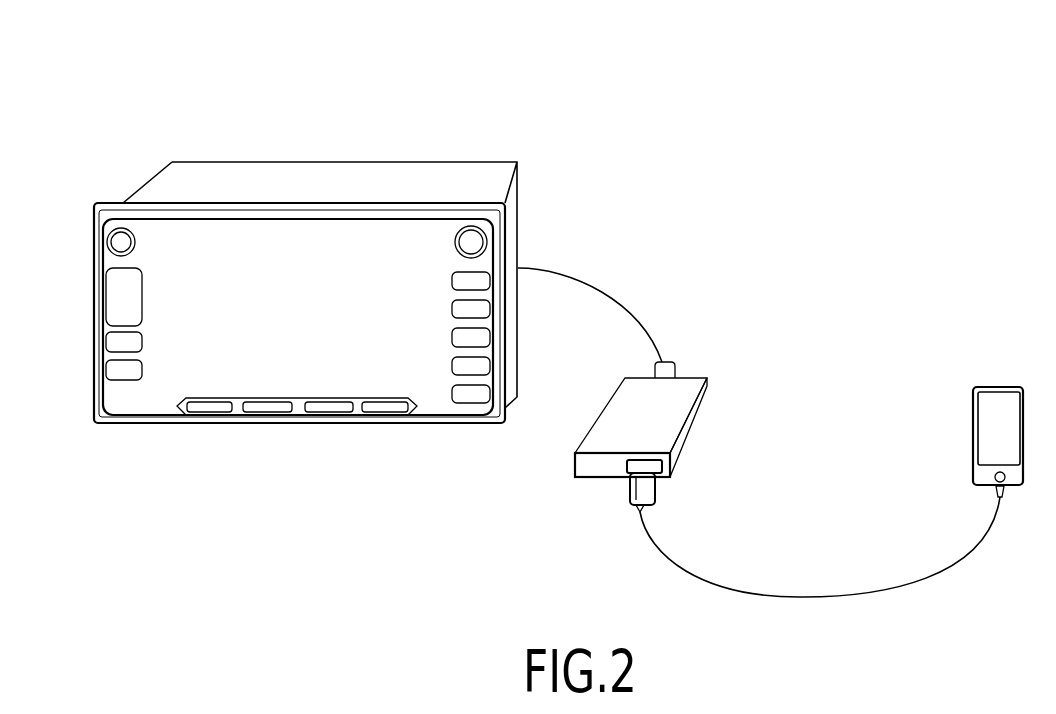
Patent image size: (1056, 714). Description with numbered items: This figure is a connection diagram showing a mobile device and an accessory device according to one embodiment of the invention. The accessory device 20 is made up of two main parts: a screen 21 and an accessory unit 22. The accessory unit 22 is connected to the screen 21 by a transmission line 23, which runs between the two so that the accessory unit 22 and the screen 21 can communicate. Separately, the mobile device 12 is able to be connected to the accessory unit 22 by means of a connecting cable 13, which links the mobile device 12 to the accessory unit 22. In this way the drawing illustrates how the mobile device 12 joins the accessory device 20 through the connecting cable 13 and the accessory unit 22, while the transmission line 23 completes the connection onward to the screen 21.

The accessory device 20 is at (676, 111).
The screen 21 is at (397, 172).
The accessory unit 22 is at (673, 400).
The transmission line 23 is at (625, 297).
The mobile device 12 is at (995, 408).
The connecting cable 13 is at (887, 587).